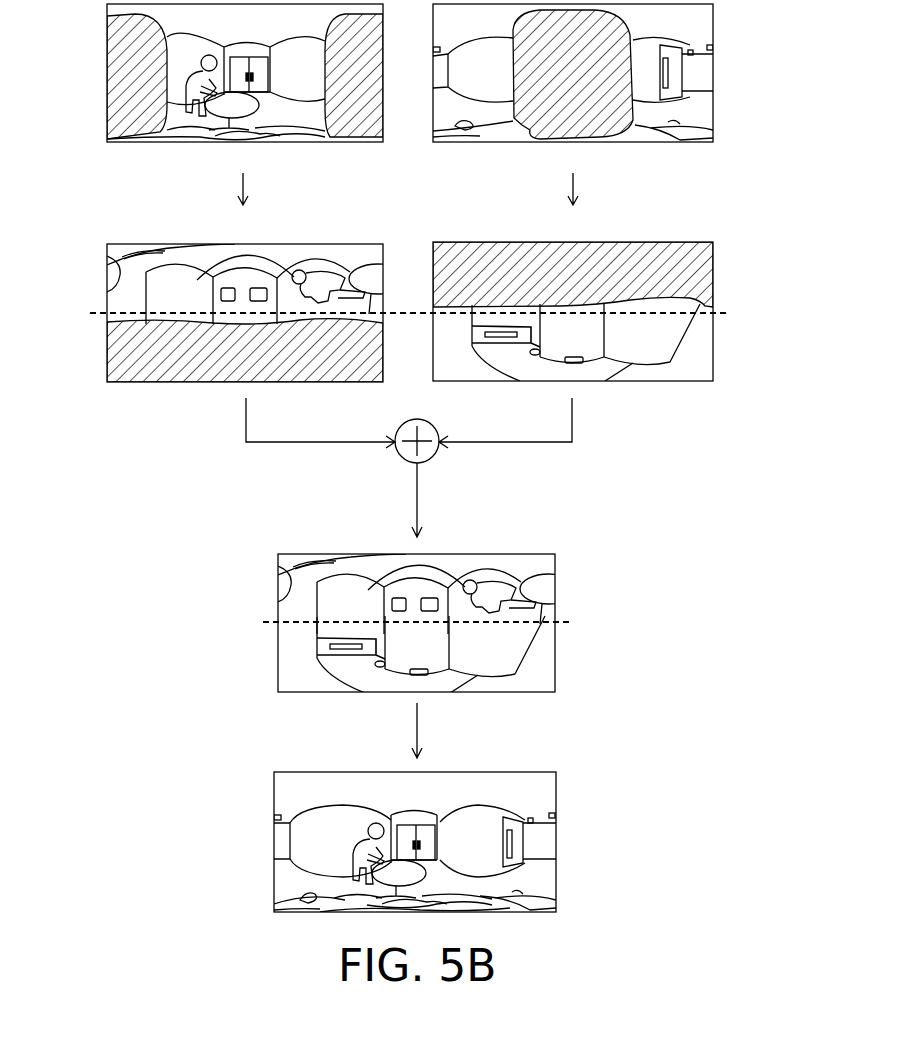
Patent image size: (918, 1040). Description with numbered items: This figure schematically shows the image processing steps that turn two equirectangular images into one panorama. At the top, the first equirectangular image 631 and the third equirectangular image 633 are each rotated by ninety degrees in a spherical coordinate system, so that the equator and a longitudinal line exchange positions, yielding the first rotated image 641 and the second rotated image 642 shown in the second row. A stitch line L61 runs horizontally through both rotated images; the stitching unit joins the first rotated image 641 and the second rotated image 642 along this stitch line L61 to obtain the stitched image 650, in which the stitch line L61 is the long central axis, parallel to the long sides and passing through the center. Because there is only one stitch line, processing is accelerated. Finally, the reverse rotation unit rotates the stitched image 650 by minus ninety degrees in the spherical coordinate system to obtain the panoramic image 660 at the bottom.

The first equirectangular image 631 is at (107, 70).
The third equirectangular image 633 is at (713, 70).
The first rotated image 641 is at (320, 244).
The second rotated image 642 is at (647, 242).
The stitched image 650 is at (557, 655).
The panoramic image 660 is at (557, 840).
The stitch line L61 is at (409, 468).